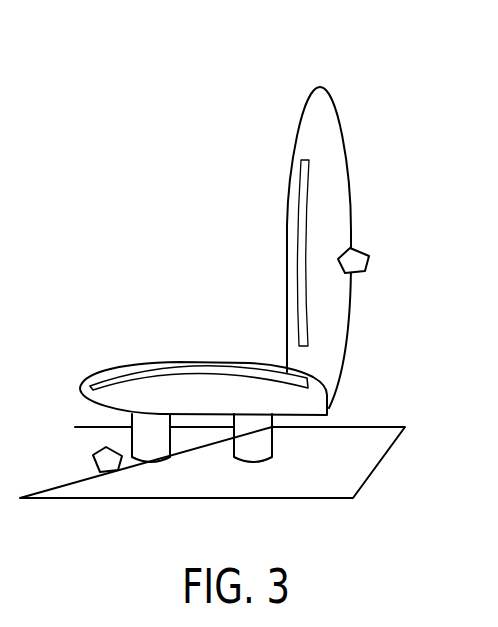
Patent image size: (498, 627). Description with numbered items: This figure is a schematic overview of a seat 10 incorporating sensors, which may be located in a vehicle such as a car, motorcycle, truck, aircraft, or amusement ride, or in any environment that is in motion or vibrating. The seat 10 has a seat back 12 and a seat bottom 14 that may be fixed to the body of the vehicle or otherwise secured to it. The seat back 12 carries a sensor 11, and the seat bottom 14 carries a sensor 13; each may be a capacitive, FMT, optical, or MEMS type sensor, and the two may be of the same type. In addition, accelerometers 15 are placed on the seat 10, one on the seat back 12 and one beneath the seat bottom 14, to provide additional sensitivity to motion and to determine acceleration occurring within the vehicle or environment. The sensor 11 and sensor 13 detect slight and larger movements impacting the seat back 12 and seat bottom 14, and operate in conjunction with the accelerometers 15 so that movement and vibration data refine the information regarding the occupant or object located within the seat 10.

The seat 10 is at (240, 259).
The sensor 11 is at (303, 177).
The seat back 12 is at (313, 112).
The sensor 13 is at (143, 375).
The seat bottom 14 is at (115, 378).
The accelerometers 15 is at (360, 262).